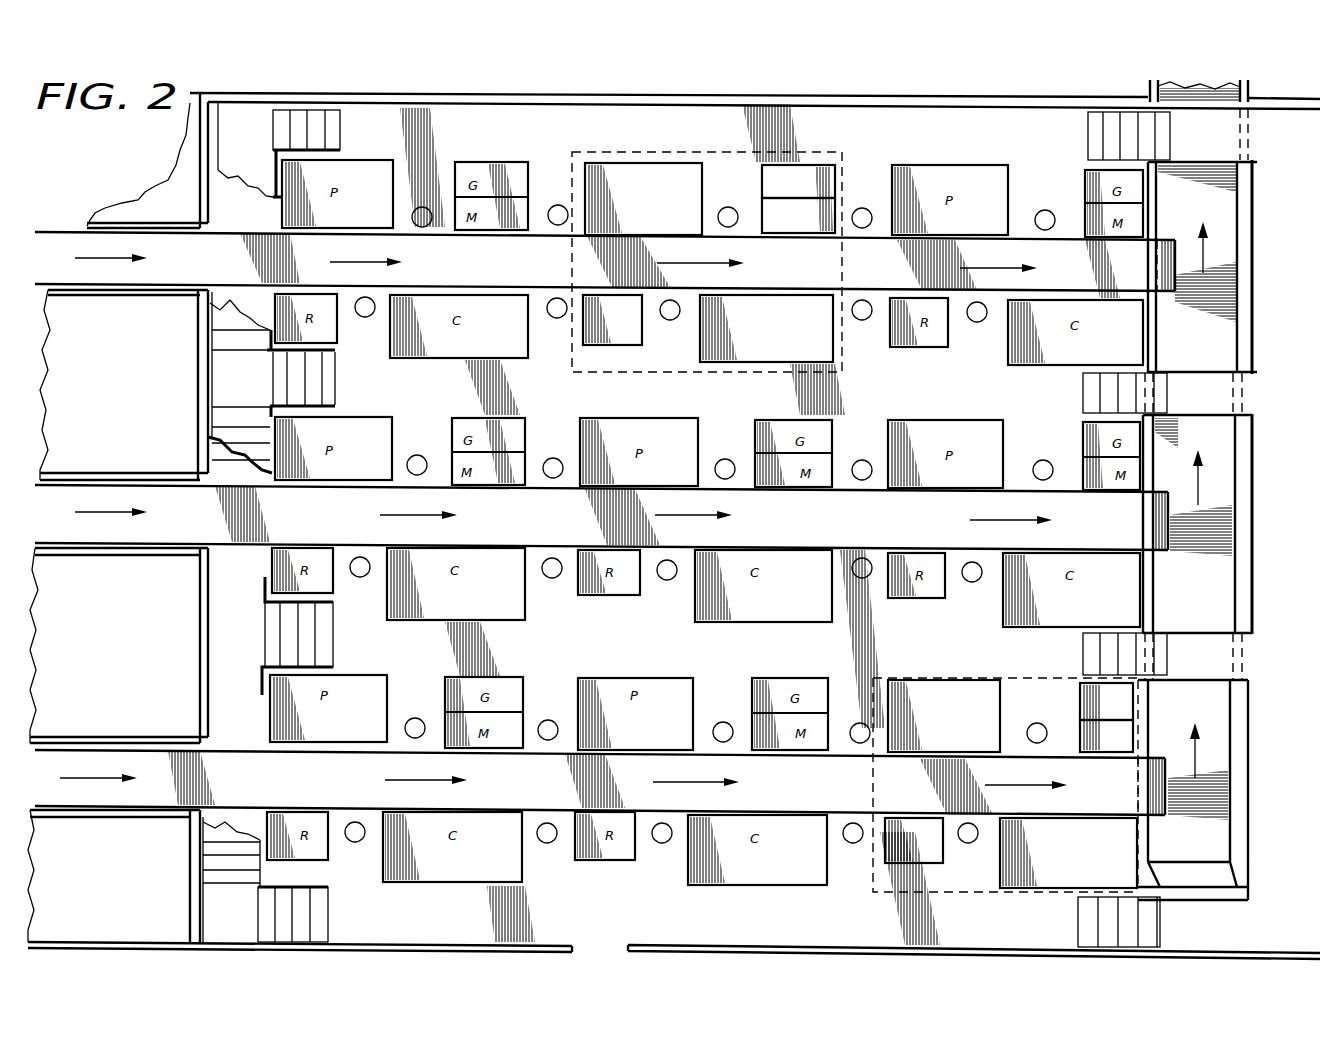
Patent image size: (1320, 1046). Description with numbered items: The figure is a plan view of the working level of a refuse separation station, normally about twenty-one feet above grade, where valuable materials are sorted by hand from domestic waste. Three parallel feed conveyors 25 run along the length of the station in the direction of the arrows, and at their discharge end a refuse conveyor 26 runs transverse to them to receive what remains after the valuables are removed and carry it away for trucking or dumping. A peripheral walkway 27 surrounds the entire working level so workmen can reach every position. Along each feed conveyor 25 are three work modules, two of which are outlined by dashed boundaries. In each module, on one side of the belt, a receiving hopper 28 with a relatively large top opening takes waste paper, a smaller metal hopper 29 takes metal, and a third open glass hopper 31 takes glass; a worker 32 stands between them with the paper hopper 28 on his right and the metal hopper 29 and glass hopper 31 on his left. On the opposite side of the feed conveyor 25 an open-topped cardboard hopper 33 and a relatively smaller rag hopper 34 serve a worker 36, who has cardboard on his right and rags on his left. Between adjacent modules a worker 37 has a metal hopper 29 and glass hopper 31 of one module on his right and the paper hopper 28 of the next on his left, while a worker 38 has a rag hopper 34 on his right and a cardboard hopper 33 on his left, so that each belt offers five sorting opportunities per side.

The feed conveyor 25 is at (205, 265).
The refuse conveyor 26 is at (1242, 93).
The peripheral walkway 27 is at (535, 138).
The receiving hopper 28 is at (618, 163).
The metal hopper 29 is at (836, 212).
The glass hopper 31 is at (836, 168).
The worker 32 is at (738, 186).
The cardboard hopper 33 is at (738, 362).
The rag hopper 34 is at (622, 345).
The worker 36 is at (670, 320).
The worker 37 is at (558, 205).
The worker 38 is at (557, 318).